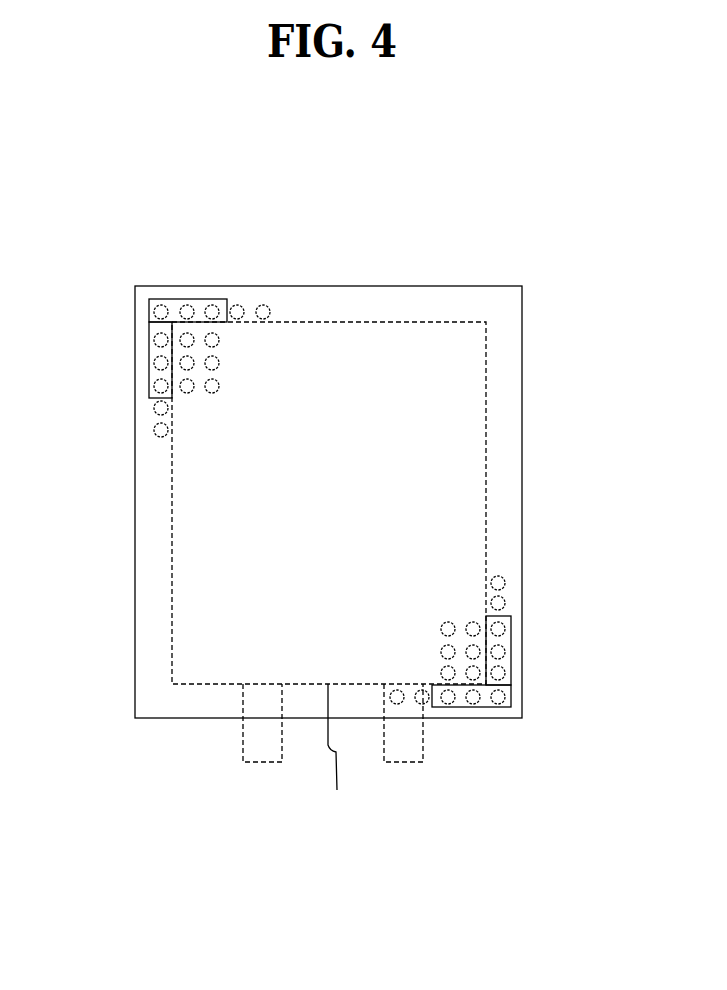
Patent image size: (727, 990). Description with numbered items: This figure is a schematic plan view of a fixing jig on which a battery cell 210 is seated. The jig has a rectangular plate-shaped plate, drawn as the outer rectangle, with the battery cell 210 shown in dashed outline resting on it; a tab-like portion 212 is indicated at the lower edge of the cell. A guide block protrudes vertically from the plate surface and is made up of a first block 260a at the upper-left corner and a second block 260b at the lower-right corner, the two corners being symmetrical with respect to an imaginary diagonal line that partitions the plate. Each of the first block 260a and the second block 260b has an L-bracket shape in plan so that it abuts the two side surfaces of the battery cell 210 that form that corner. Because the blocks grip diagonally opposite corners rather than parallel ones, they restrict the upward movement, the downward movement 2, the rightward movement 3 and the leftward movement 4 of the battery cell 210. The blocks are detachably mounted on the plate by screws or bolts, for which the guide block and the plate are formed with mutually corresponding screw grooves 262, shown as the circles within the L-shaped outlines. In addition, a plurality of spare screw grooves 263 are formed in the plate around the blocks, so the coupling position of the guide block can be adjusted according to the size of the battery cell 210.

The downward movement 2 is at (370, 322).
The rightward movement 3 is at (172, 527).
The leftward movement 4 is at (487, 518).
The battery cell 210 is at (463, 487).
The connection tab 212 is at (250, 747).
The first block 260a is at (180, 297).
The second block 260b is at (512, 684).
The screw grooves 262 is at (165, 315).
The spare screw grooves 263 is at (263, 312).